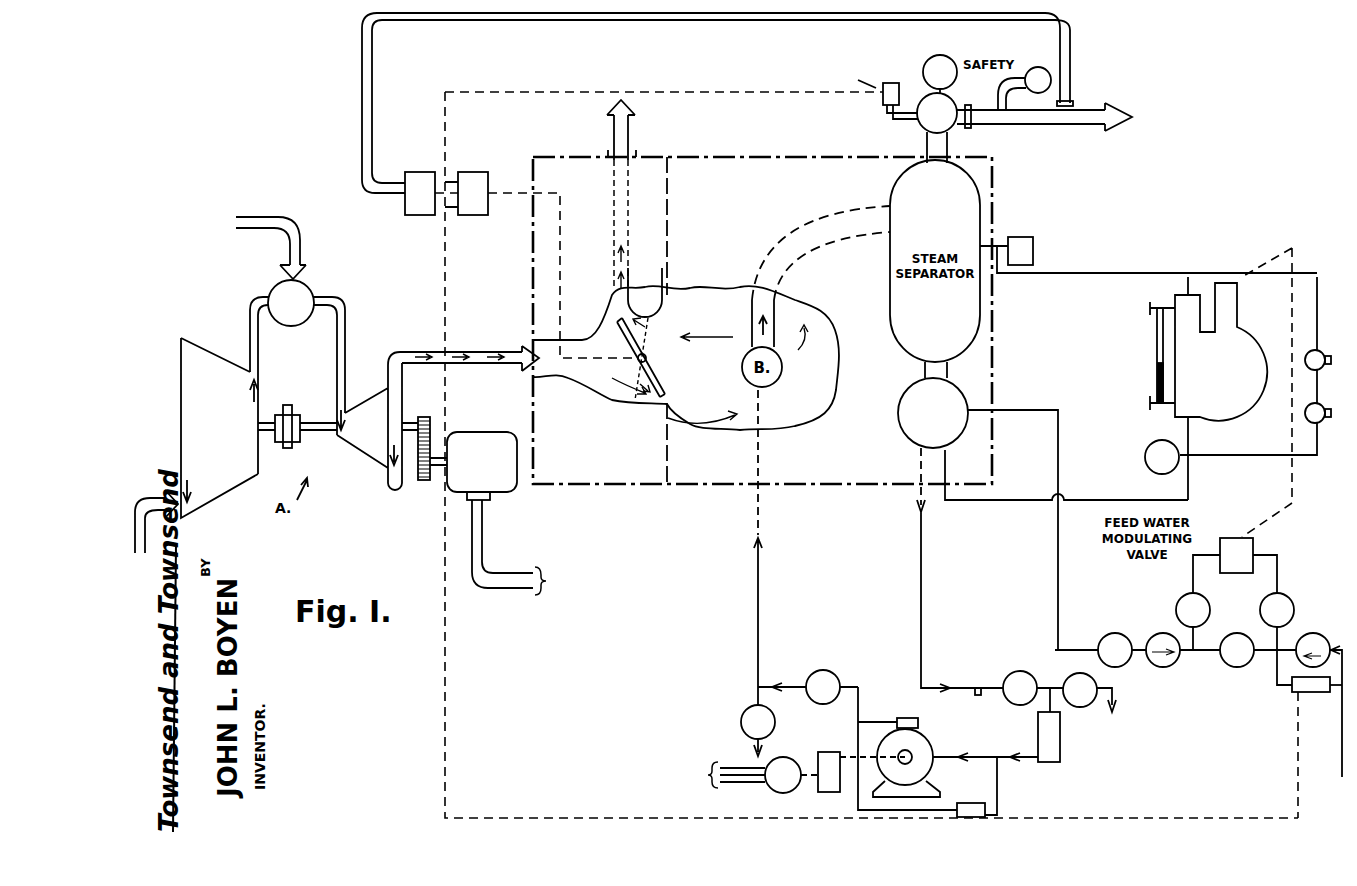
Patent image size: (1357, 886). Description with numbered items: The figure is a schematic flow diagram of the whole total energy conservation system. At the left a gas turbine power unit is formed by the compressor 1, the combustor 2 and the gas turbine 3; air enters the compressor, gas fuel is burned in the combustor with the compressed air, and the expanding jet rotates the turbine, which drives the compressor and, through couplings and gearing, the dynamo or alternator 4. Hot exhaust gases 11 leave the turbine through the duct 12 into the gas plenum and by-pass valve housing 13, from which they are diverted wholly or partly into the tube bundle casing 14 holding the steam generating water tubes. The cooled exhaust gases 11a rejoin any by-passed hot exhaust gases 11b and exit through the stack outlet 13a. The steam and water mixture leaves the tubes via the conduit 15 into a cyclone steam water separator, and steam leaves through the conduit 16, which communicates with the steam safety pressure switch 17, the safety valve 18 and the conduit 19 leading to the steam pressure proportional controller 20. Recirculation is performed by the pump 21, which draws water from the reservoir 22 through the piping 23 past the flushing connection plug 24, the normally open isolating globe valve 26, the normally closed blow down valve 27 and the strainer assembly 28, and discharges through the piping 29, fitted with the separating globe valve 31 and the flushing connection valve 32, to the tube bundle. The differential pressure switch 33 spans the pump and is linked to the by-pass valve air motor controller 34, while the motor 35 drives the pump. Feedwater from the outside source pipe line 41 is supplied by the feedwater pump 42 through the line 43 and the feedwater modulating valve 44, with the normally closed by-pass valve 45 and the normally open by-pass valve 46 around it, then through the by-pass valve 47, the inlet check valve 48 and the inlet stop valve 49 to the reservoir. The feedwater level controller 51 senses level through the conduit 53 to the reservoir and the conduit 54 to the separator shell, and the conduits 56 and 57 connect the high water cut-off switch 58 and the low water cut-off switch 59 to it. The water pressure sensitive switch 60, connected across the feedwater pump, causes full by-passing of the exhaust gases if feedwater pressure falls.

The compressor 1 is at (192, 350).
The combustor 2 is at (303, 295).
The gas turbine 3 is at (374, 407).
The dynamo or alternator 4 is at (502, 435).
The hot exhaust gases 11 is at (433, 351).
The cooled exhaust gases 11a is at (648, 334).
The by-passed hot exhaust gases 11b is at (618, 270).
The duct 12 is at (493, 351).
The gas plenum and by-pass valve housing 13 is at (600, 405).
The stack outlet 13a is at (613, 153).
The tube bundle casing 14 is at (688, 495).
The conduit 15 is at (798, 236).
The conduit 16 is at (940, 138).
The steam safety pressure switch 17 is at (895, 88).
The safety valve 18 is at (924, 63).
The conduit 19 is at (1028, 120).
The steam pressure proportional controller 20 is at (425, 175).
The recirculating pump 21 is at (915, 737).
The reservoir 22 is at (950, 441).
The piping 23 is at (921, 521).
The flushing connection plug 24 is at (988, 703).
The isolating globe valve 26 is at (1029, 688).
The blow down valve 27 is at (1091, 686).
The strainer assembly 28 is at (1062, 725).
The piping 29 is at (800, 682).
The separating globe valve 31 is at (832, 681).
The flushing connection valve 32 is at (766, 719).
The differential pressure switch 33 is at (960, 803).
The by-pass valve air motor controller 34 is at (481, 175).
The motor 35 is at (784, 759).
The outside source pipe line 41 is at (1342, 722).
The feedwater pump 42 is at (1318, 641).
The feedwater line 43 is at (1057, 545).
The feedwater modulating valve 44 is at (1245, 549).
The feedwater by-pass valve 45 is at (1240, 641).
The feedwater by-pass valve 46 is at (1284, 601).
The feedwater by-pass valve 47 is at (1200, 601).
The inlet check valve 48 is at (1173, 640).
The inlet stop valve 49 is at (1120, 641).
The feedwater level controller 51 is at (1185, 292).
The conduit 53 is at (1135, 500).
The conduit 54 is at (1110, 277).
The conduit 56 is at (1317, 290).
The conduit 57 is at (1228, 457).
The high water sensitive cut-off switch 58 is at (1318, 357).
The low water sensitive cut-off switch 59 is at (1318, 410).
The water pressure sensitive switch 60 is at (1293, 692).